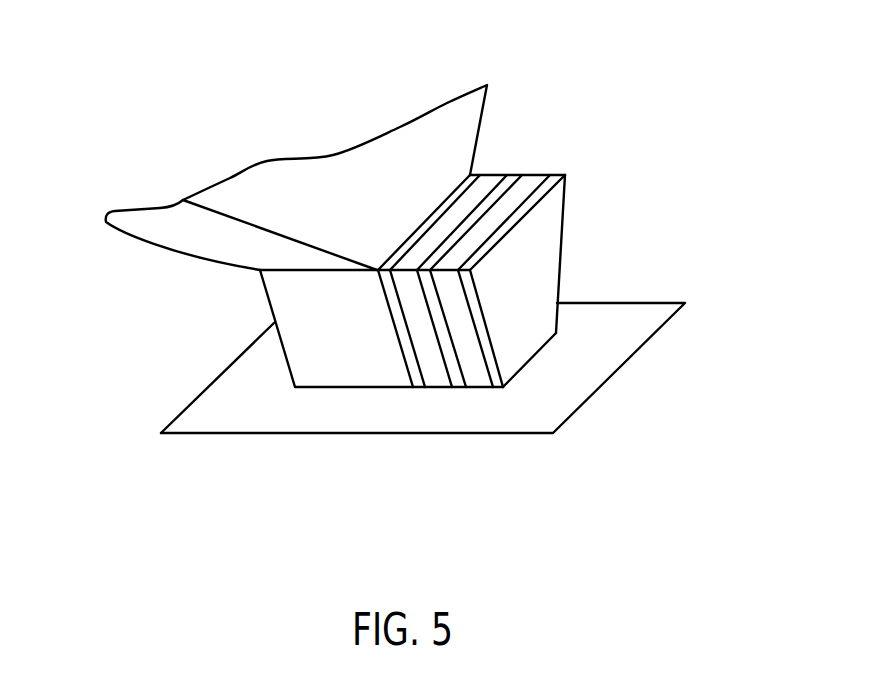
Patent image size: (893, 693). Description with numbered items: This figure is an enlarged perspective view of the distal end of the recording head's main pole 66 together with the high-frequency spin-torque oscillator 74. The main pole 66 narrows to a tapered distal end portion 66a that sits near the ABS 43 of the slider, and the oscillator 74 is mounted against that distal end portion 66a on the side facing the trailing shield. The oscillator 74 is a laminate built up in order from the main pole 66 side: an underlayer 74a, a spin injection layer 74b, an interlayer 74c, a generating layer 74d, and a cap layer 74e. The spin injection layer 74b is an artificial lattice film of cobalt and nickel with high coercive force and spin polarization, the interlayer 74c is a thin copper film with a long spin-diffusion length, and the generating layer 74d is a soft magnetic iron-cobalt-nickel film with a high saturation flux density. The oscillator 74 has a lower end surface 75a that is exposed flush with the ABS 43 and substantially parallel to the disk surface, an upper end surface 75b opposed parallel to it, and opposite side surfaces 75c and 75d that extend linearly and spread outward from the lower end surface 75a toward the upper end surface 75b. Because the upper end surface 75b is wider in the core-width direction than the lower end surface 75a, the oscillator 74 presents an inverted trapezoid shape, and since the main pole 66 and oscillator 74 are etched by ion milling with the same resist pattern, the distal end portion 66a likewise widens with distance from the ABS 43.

The ABS 43 is at (192, 427).
The main pole 66 is at (175, 233).
The distal end portion 66a is at (303, 380).
The spin-torque oscillator 74 is at (471, 370).
The underlayer 74a is at (420, 385).
The spin injection layer 74b is at (437, 383).
The interlayer 74c is at (458, 385).
The generating layer 74d is at (480, 383).
The cap layer 74e is at (517, 347).
The lower end surface 75a is at (532, 358).
The upper end surface 75b is at (533, 180).
The side surface 75c is at (565, 222).
The side surface 75d is at (417, 332).